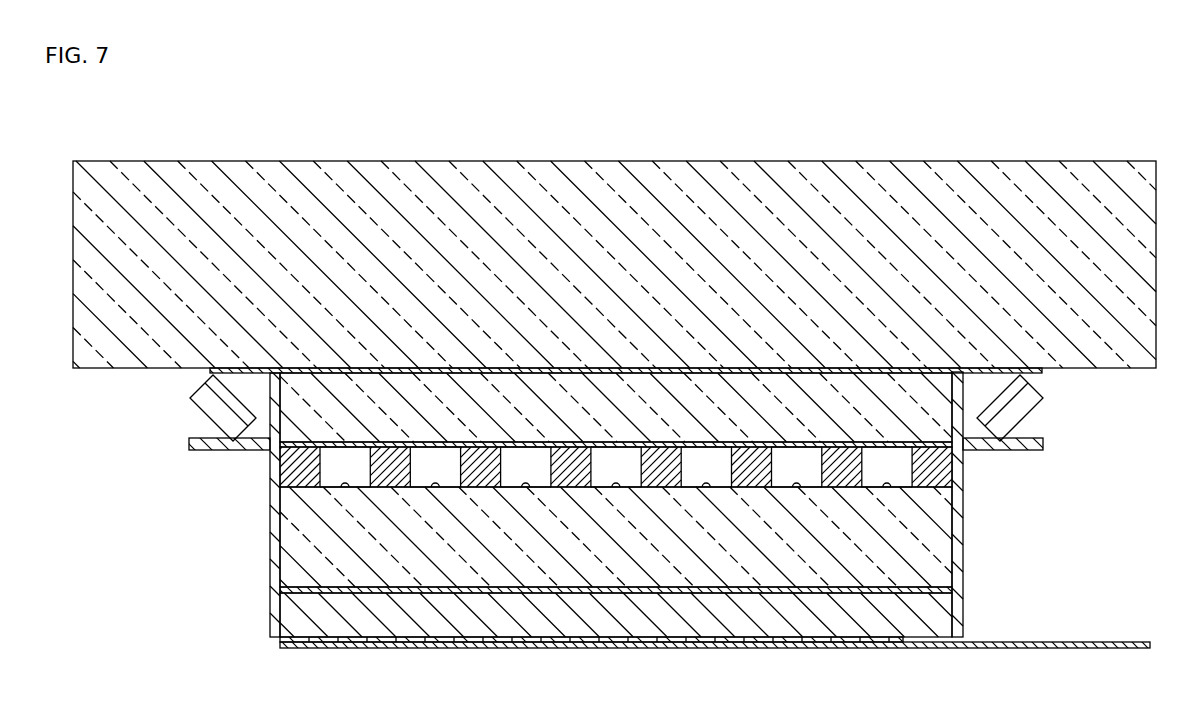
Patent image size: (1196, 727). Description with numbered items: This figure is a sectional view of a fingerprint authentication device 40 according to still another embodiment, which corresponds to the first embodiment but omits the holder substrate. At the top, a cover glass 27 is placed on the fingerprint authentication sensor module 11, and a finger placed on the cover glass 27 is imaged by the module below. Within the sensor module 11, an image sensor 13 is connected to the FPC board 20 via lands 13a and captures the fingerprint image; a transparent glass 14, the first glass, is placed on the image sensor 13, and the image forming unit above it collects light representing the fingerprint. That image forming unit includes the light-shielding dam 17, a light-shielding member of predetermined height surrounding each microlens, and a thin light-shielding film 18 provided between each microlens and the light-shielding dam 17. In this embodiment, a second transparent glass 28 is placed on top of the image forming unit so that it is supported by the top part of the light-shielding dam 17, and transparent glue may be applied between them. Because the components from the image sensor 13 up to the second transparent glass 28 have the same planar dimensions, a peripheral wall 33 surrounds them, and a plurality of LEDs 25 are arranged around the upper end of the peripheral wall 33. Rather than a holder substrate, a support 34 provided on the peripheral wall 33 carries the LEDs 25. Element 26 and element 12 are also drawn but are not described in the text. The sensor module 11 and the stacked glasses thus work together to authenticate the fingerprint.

The fingerprint authentication device 40 is at (774, 121).
The fingerprint authentication sensor module 11 is at (849, 360).
The cover glass 27 is at (511, 182).
The second transparent glass 28 is at (708, 405).
The metal plate 26 is at (212, 373).
The LED 25 is at (215, 409).
The support 34 is at (222, 447).
The peripheral wall 33 is at (962, 542).
The light-shielding dam 17 is at (466, 470).
The light-shielding film 18 is at (527, 485).
The circuit substrate 12 is at (335, 694).
The transparent glass 14 is at (360, 566).
The image sensor 13 is at (787, 627).
The land 13a is at (895, 644).
The FPC board 20 is at (1028, 650).